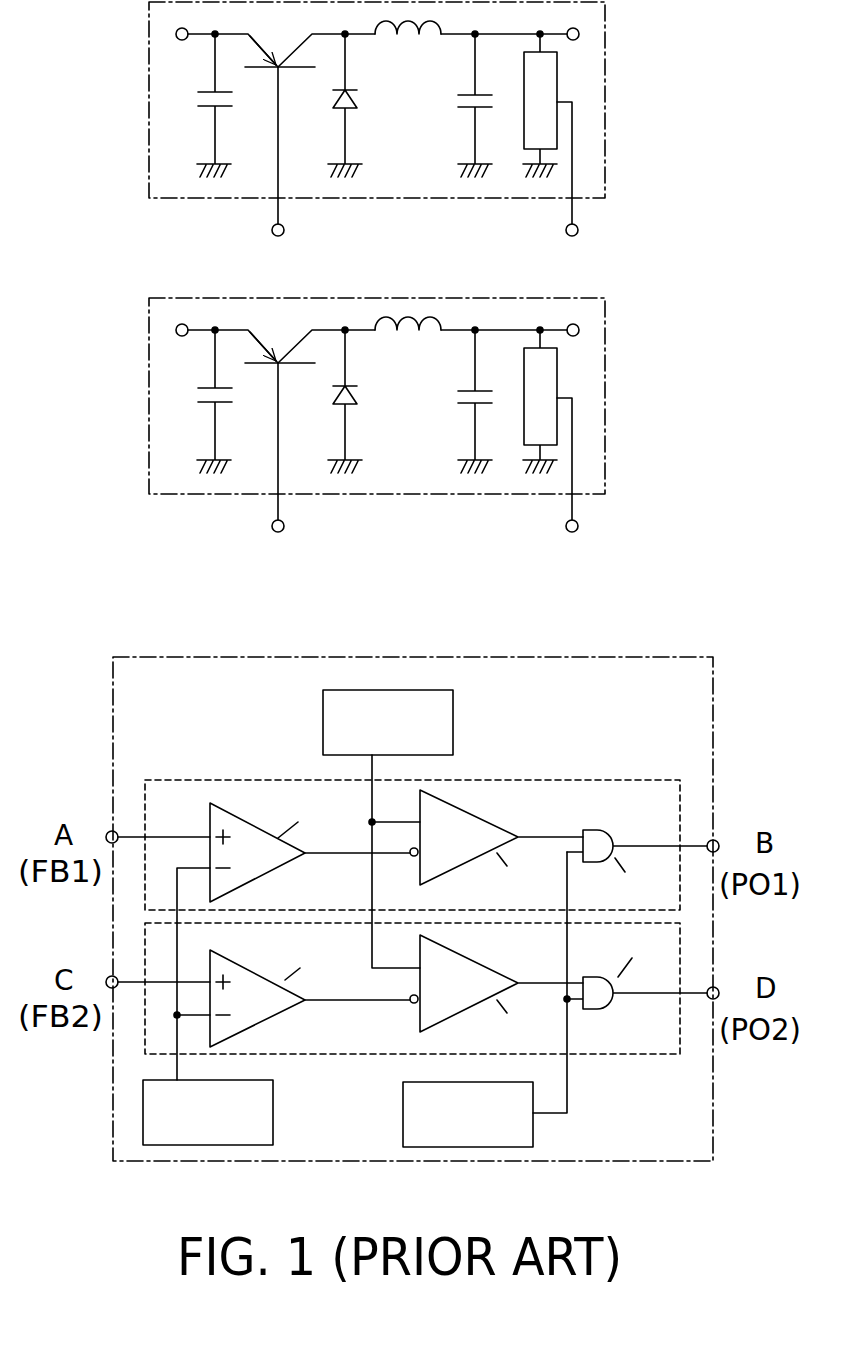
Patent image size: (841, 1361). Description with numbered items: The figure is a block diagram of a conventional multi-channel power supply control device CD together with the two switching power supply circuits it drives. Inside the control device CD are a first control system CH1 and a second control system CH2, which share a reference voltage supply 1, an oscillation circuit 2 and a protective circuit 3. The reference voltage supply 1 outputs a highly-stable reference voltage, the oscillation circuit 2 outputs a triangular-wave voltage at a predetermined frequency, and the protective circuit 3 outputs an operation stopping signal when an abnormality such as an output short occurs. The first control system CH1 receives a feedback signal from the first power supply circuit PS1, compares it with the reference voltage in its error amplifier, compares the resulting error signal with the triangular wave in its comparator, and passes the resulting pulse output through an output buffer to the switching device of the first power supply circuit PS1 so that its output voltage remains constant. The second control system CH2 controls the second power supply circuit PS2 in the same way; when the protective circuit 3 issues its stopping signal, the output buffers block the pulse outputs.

The reference voltage supply 1 is at (278, 1105).
The oscillation circuit 2 is at (455, 718).
The protective circuit 3 is at (403, 1115).
The first power supply circuit PS1 is at (610, 93).
The second power supply circuit PS2 is at (610, 389).
The control device CD is at (718, 708).
The first control system CH1 is at (638, 778).
The second control system CH2 is at (646, 1063).